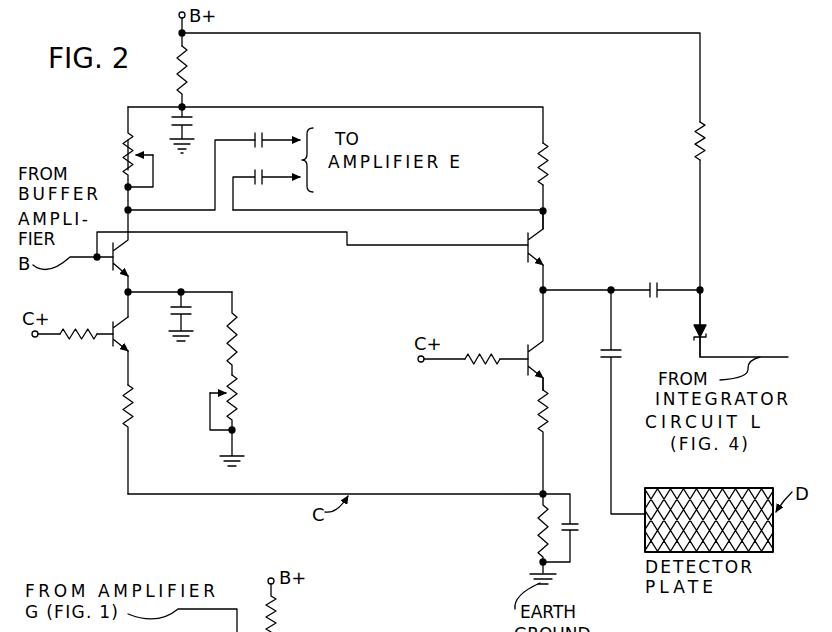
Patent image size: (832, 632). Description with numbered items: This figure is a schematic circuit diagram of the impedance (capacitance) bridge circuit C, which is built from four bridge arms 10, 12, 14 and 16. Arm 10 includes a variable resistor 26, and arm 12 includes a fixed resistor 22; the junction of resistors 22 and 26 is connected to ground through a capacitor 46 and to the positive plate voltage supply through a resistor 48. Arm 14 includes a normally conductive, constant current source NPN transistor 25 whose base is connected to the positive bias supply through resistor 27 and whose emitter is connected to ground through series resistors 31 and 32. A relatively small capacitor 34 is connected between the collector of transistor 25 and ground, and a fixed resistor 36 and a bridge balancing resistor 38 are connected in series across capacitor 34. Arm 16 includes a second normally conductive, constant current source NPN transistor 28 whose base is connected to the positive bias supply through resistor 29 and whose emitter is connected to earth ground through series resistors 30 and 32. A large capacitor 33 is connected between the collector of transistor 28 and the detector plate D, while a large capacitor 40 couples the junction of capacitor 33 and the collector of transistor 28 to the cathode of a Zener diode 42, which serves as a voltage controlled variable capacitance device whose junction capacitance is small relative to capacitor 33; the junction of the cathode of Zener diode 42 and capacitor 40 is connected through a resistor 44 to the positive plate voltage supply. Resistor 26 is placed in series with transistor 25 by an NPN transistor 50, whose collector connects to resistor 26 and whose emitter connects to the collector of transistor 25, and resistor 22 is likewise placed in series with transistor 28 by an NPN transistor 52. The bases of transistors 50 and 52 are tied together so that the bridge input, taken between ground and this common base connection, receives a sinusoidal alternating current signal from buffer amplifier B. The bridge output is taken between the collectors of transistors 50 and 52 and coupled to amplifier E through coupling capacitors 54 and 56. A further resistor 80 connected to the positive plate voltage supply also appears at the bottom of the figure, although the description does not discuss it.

The bridge arm 10 is at (104, 151).
The bridge arm 12 is at (578, 185).
The bridge arm 14 is at (106, 370).
The bridge arm 16 is at (515, 383).
The fixed resistor 22 is at (546, 159).
The NPN transistor 25 is at (129, 349).
The variable resistor 26 is at (126, 136).
The resistor 27 is at (71, 338).
The NPN transistor 28 is at (526, 351).
The resistor 29 is at (479, 356).
The resistor 30 is at (539, 416).
The resistor 31 is at (131, 402).
The resistor 32 is at (538, 532).
The capacitor 33 is at (617, 352).
The capacitor 34 is at (172, 313).
The fixed resistor 36 is at (238, 330).
The bridge balancing resistor 38 is at (248, 394).
The capacitor 40 is at (656, 283).
The Zener diode 42 is at (710, 333).
The resistor 44 is at (707, 135).
The capacitor 46 is at (178, 122).
The resistor 48 is at (185, 68).
The NPN transistor 50 is at (129, 253).
The NPN transistor 52 is at (543, 249).
The coupling capacitor 54 is at (268, 136).
The coupling capacitor 56 is at (252, 180).
The resistor 80 is at (279, 616).